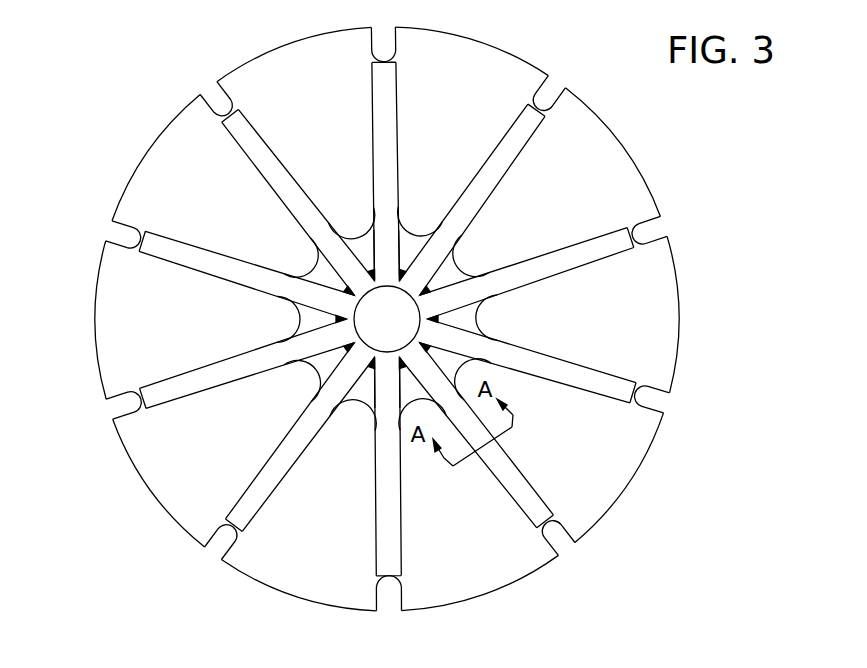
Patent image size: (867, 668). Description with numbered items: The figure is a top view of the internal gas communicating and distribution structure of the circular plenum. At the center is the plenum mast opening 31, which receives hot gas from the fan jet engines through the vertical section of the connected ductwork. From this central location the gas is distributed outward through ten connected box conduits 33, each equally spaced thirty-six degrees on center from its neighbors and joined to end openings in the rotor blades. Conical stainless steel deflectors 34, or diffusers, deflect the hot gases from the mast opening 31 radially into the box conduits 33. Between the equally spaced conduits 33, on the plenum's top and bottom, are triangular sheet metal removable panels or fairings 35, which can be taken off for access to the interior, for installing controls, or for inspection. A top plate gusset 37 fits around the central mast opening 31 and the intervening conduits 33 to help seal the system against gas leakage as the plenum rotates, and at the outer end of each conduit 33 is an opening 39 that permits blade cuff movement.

The central plenum mast opening 31 is at (367, 335).
The box conduit 33 is at (388, 187).
The conical stainless steel deflector 34 is at (370, 278).
The triangular sheet metal removable panel 35 is at (287, 124).
The top plate gusset 37 is at (305, 318).
The opening 39 is at (388, 44).